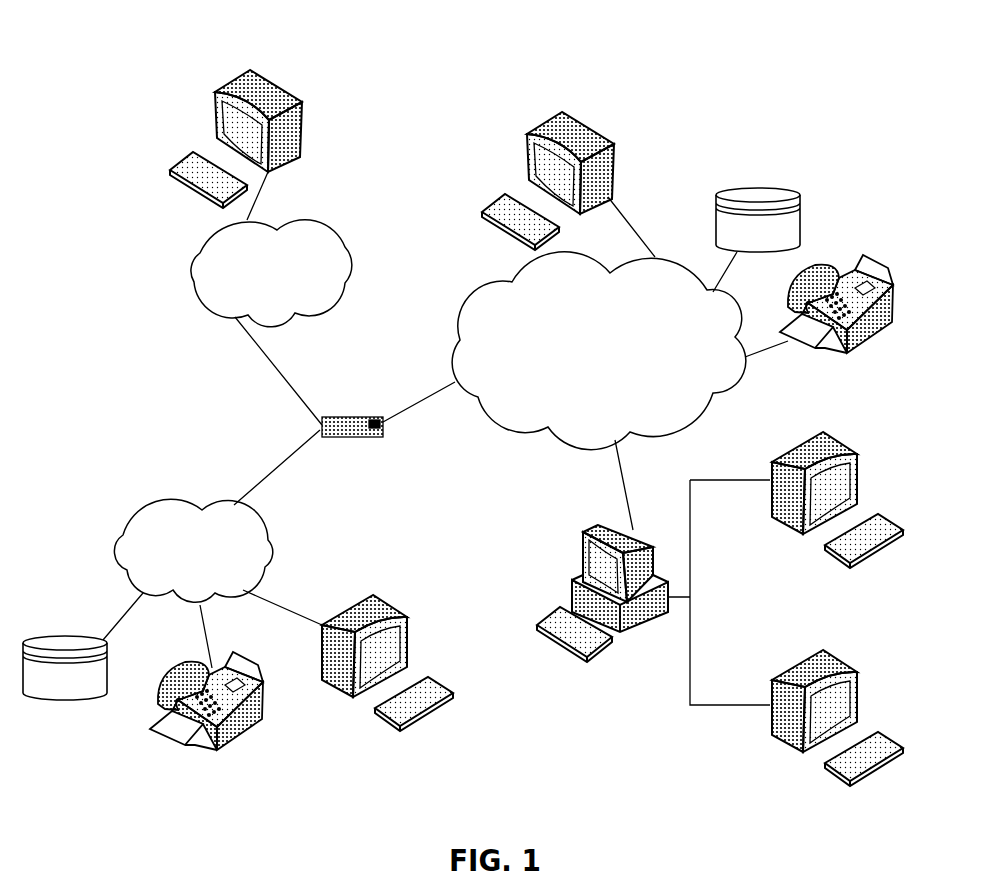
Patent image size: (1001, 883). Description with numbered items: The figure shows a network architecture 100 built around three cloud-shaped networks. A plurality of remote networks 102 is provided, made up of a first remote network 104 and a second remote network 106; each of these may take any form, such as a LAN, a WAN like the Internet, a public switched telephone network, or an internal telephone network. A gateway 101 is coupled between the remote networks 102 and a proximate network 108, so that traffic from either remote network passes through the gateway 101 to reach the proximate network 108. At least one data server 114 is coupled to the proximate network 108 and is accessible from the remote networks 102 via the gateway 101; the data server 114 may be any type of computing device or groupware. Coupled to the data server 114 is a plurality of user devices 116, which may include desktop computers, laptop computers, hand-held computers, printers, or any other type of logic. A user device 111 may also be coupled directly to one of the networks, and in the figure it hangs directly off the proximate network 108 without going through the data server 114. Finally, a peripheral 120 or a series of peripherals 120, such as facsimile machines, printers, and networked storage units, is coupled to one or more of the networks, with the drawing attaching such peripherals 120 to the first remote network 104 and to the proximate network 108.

The network architecture 100 is at (158, 57).
The gateway 101 is at (335, 413).
The remote networks 102 is at (184, 330).
The first remote network 104 is at (123, 523).
The second remote network 106 is at (344, 246).
The proximate network 108 is at (703, 420).
The user device 111 is at (612, 145).
The data server 114 is at (583, 545).
The user devices 116 is at (303, 106).
The peripheral 120 is at (68, 705).